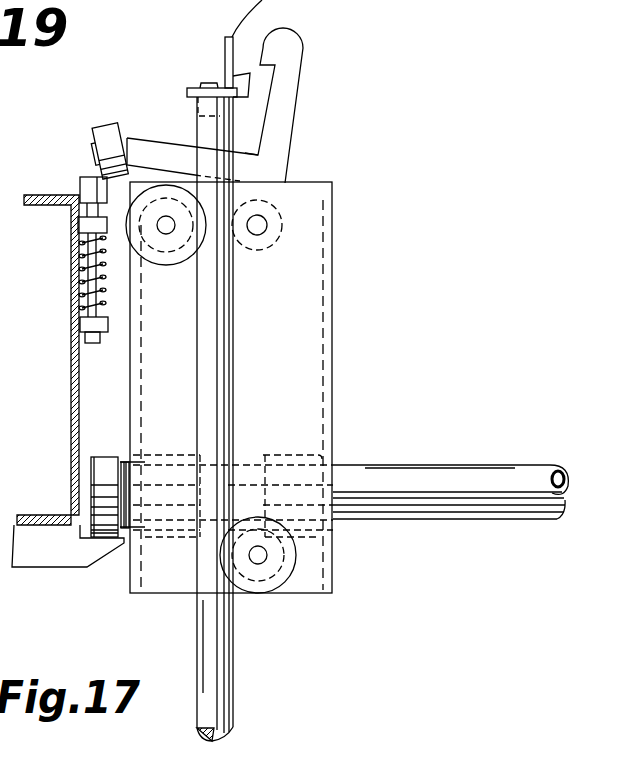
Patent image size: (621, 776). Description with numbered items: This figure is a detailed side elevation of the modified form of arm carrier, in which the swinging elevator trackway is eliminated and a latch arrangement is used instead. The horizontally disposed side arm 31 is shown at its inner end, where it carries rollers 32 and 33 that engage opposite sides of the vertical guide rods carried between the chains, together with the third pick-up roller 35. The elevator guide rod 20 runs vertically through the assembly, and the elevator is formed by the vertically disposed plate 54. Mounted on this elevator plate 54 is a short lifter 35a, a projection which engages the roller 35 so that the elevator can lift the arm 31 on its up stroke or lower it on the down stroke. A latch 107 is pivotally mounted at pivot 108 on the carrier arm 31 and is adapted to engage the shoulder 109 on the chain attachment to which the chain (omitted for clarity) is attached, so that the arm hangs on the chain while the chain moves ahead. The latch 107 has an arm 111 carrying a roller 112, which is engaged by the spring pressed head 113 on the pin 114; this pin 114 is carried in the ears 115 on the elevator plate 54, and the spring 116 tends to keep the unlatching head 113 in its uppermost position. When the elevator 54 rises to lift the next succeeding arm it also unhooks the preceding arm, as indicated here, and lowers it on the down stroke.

The elevator guide rod 20 is at (222, 697).
The side arm 31 is at (325, 386).
The roller 32 is at (258, 592).
The roller 33 is at (158, 258).
The roller 35 is at (100, 457).
The short lifter 35a is at (50, 560).
The vertically disposed plate 54 is at (72, 426).
The latch 107 is at (298, 67).
The pivot 108 is at (261, 242).
The shoulder 109 is at (242, 88).
The arm 111 is at (146, 140).
The roller 112 is at (104, 125).
The spring pressed head 113 is at (84, 182).
The pin 114 is at (92, 343).
The ear 115 is at (108, 333).
The spring 116 is at (84, 275).